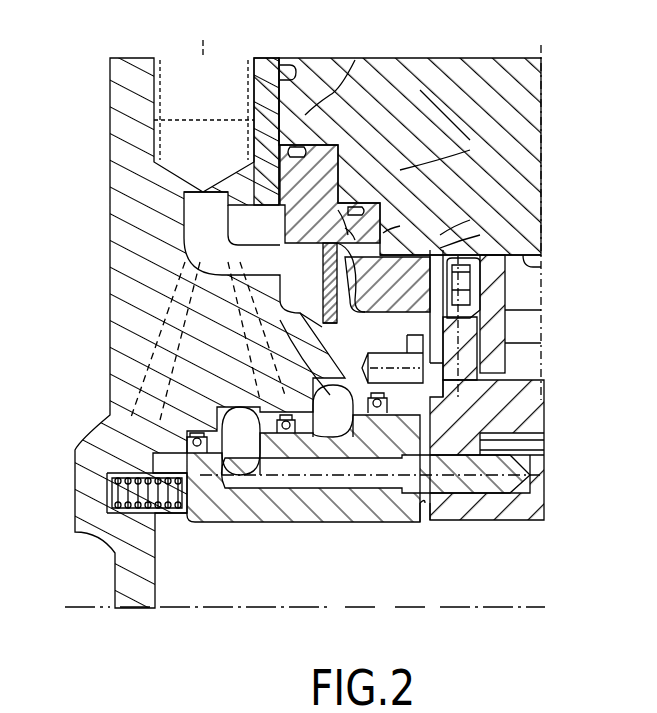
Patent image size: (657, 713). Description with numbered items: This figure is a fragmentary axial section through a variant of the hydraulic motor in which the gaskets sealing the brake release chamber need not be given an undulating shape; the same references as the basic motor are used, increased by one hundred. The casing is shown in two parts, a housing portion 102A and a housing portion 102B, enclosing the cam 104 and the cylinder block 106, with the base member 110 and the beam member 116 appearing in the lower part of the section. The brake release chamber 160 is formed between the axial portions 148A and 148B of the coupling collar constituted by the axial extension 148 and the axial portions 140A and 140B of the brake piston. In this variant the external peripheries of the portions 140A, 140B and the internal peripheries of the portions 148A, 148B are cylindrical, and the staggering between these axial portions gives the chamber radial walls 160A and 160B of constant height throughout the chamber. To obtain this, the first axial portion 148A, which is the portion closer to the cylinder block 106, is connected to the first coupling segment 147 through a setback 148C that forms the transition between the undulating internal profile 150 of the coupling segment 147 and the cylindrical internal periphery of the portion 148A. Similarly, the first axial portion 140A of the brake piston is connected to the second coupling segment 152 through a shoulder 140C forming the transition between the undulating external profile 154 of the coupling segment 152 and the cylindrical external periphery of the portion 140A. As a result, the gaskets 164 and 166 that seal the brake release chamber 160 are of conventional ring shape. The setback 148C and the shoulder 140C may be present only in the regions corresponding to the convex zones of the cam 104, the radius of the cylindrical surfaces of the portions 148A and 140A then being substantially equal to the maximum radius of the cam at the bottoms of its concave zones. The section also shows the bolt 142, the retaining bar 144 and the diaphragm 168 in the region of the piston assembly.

The housing upper part 102A is at (455, 58).
The housing lower part 102B is at (117, 122).
The cam 104 is at (520, 262).
The cylinder block 106 is at (472, 420).
The base member 110 is at (90, 605).
The beam member 116 is at (305, 524).
The first axial portion of the brake piston 140A is at (353, 265).
The second axial portion of the brake piston 140B is at (283, 165).
The shoulder 140C is at (360, 372).
The bolt 142 is at (430, 297).
The retaining bar 144 is at (430, 343).
The first coupling segment 147 is at (470, 220).
The axial extension 148 is at (437, 133).
The first axial portion of the axial extension 148A is at (470, 150).
The second axial portion of the axial extension 148B is at (297, 60).
The setback 148C is at (400, 226).
The internal profile 150 is at (445, 240).
The second coupling segment 152 is at (392, 354).
The external profile 154 is at (387, 284).
The brake release chamber 160 is at (340, 143).
The radial wall of the chamber 160A is at (283, 207).
The radial wall of the chamber 160B is at (345, 175).
The gasket 164 is at (355, 197).
The gasket 166 is at (357, 60).
The diaphragm 168 is at (301, 354).